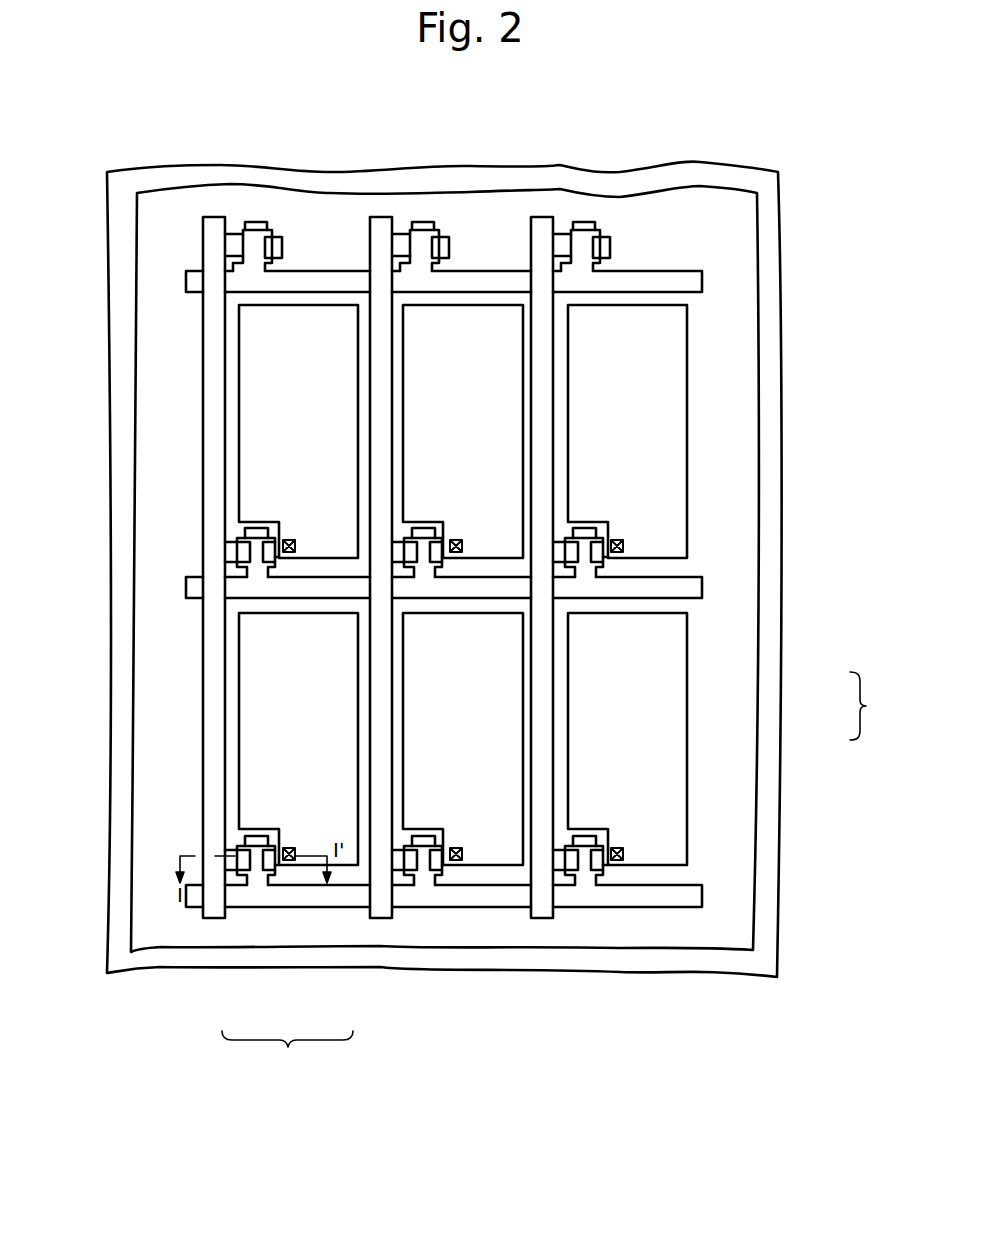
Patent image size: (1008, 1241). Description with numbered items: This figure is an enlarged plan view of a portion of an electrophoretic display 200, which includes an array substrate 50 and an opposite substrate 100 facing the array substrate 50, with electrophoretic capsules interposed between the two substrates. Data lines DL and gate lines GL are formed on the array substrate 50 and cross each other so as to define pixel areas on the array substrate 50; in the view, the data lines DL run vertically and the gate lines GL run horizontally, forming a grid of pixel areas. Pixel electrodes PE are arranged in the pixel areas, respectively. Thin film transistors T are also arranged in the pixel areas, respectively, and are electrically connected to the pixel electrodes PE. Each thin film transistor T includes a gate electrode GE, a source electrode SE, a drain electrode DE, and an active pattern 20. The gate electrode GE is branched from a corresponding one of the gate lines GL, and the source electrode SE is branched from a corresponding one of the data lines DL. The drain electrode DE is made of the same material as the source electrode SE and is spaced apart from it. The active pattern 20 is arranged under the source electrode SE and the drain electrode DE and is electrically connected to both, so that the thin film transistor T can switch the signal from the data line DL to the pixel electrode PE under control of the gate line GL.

The data line DL is at (545, 1003).
The gate line GL is at (813, 896).
The pixel electrode PE is at (250, 755).
The source electrode SE is at (237, 860).
The active pattern 20 is at (255, 870).
The gate electrode GE is at (260, 878).
The drain electrode DE is at (270, 867).
The thin film transistor T is at (287, 1050).
The opposite substrate 100 is at (767, 683).
The array substrate 50 is at (732, 733).
The electrophoretic display 200 is at (876, 706).